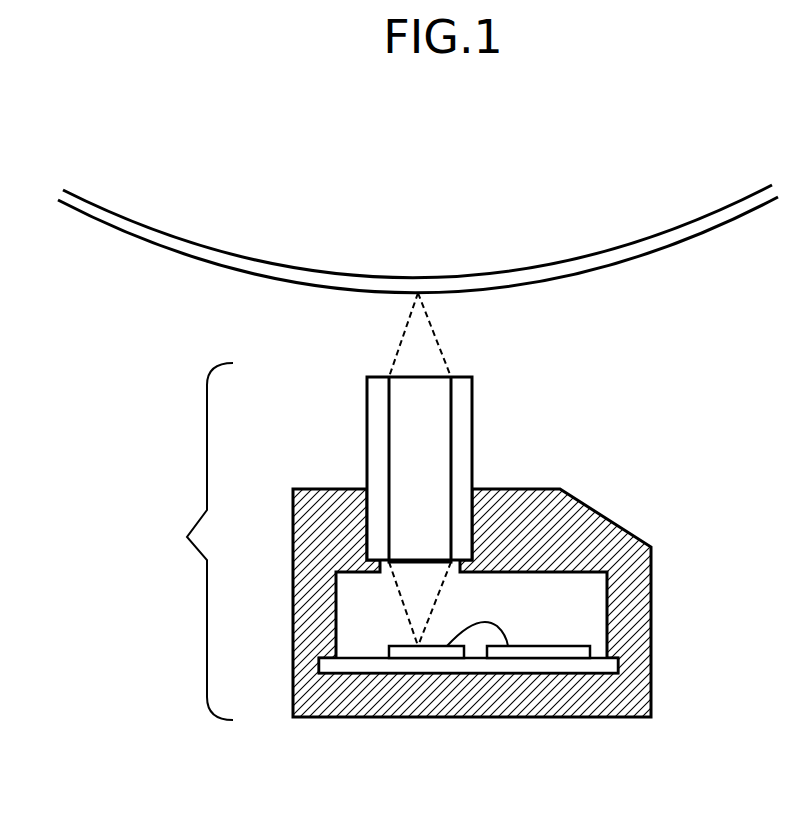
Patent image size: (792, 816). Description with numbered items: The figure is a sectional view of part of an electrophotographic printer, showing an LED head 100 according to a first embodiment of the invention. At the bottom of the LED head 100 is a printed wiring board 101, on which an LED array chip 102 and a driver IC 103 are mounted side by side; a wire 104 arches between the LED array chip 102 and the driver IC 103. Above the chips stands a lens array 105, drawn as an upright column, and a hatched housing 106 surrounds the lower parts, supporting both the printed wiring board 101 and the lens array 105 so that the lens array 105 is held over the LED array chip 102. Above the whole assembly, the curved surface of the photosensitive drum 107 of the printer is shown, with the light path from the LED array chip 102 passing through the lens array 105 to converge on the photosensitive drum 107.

The LED head 100 is at (183, 541).
The printed wiring board 101 is at (500, 667).
The LED array chip 102 is at (425, 653).
The driver IC 103 is at (550, 655).
The wire 104 is at (500, 625).
The lens array 105 is at (473, 425).
The housing 106 is at (610, 518).
The photosensitive drum 107 is at (687, 223).